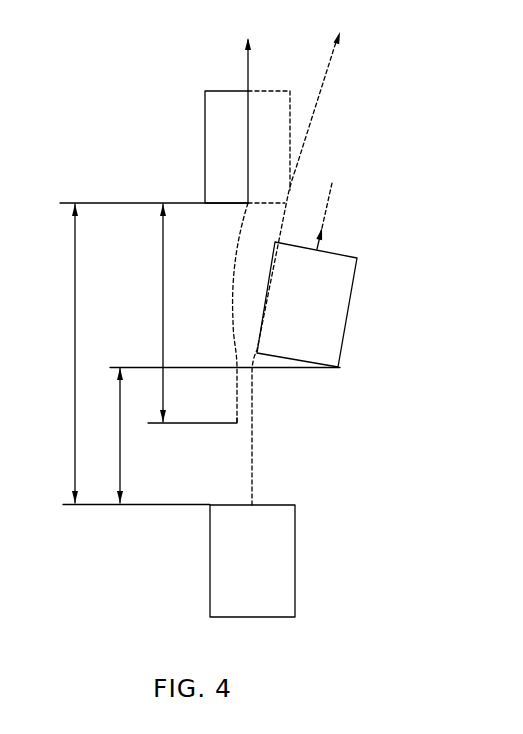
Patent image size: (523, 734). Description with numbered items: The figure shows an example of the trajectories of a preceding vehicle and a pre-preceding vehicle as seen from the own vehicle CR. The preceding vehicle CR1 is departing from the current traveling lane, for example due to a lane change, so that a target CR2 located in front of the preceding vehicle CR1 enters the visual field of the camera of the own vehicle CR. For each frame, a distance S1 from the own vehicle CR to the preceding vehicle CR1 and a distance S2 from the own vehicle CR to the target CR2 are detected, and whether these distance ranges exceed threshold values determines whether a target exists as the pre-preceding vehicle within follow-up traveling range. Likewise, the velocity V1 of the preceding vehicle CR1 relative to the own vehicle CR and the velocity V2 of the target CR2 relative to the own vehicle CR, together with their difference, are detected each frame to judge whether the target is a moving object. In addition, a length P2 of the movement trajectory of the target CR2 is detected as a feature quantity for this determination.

The own vehicle CR is at (296, 558).
The preceding vehicle CR1 is at (355, 316).
The target CR2 is at (205, 143).
The velocity of the preceding vehicle V1 is at (336, 216).
The velocity of the target V2 is at (246, 107).
The distance from the own vehicle to the preceding vehicle S1 is at (106, 435).
The distance from the own vehicle to the target S2 is at (59, 353).
The length of a trajectory of the target P2 is at (181, 313).